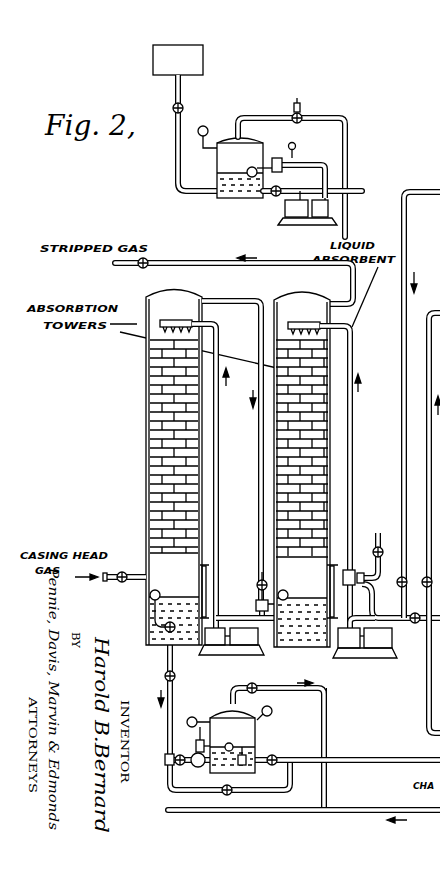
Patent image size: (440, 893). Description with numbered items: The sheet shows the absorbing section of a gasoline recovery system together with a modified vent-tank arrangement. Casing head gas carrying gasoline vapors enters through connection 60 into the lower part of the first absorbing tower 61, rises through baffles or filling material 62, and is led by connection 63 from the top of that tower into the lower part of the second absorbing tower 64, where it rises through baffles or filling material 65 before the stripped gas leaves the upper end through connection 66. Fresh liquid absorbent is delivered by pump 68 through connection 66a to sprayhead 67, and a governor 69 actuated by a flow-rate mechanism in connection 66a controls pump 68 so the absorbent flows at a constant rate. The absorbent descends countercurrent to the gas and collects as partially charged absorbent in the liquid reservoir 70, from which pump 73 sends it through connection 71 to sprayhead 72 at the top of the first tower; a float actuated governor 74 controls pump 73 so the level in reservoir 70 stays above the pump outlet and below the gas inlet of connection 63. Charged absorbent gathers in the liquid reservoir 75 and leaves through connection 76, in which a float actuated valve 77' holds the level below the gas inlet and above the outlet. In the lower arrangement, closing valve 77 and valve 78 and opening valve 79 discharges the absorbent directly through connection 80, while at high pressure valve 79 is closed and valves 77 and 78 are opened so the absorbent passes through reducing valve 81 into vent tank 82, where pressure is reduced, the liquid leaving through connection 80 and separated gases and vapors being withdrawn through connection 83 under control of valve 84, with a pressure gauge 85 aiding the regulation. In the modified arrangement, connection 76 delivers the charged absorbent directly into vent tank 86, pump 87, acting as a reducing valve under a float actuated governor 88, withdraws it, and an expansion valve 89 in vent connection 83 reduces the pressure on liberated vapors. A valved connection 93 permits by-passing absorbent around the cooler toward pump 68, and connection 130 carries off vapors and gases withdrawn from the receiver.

The connection 60 is at (132, 575).
The first absorbing tower 61 is at (146, 445).
The baffles or filling material 62 is at (168, 405).
The connection 63 is at (228, 302).
The second absorbing tower 64 is at (330, 428).
The baffles or filling material 65 is at (298, 398).
The connection 66 is at (190, 262).
The connection 66a is at (353, 470).
The sprayhead 67 is at (352, 320).
The pump 68 is at (364, 658).
The governor 69 is at (352, 570).
The liquid reservoir 70 is at (304, 634).
The connection 71 is at (221, 448).
The sprayhead 72 is at (182, 320).
The pump 73 is at (220, 654).
The float actuated governor 74 is at (250, 604).
The liquid reservoir 75 is at (150, 638).
The connection 76 is at (175, 162).
The valve 77 is at (199, 719).
The float actuated valve 77' is at (172, 600).
The valve 78 is at (276, 758).
The valve 79 is at (240, 790).
The connection 80 is at (355, 192).
The reducing valve 81 is at (201, 768).
The vent tank 82 is at (256, 732).
The connection 83 is at (347, 149).
The valve 84 is at (262, 688).
The pressure gauge 85 is at (272, 712).
The vent tank 86 is at (234, 198).
The pump 87 is at (296, 225).
The float actuated governor 88 is at (288, 168).
The expansion valve 89 is at (307, 116).
The valved connection 93 is at (415, 623).
The connection 130 is at (285, 815).